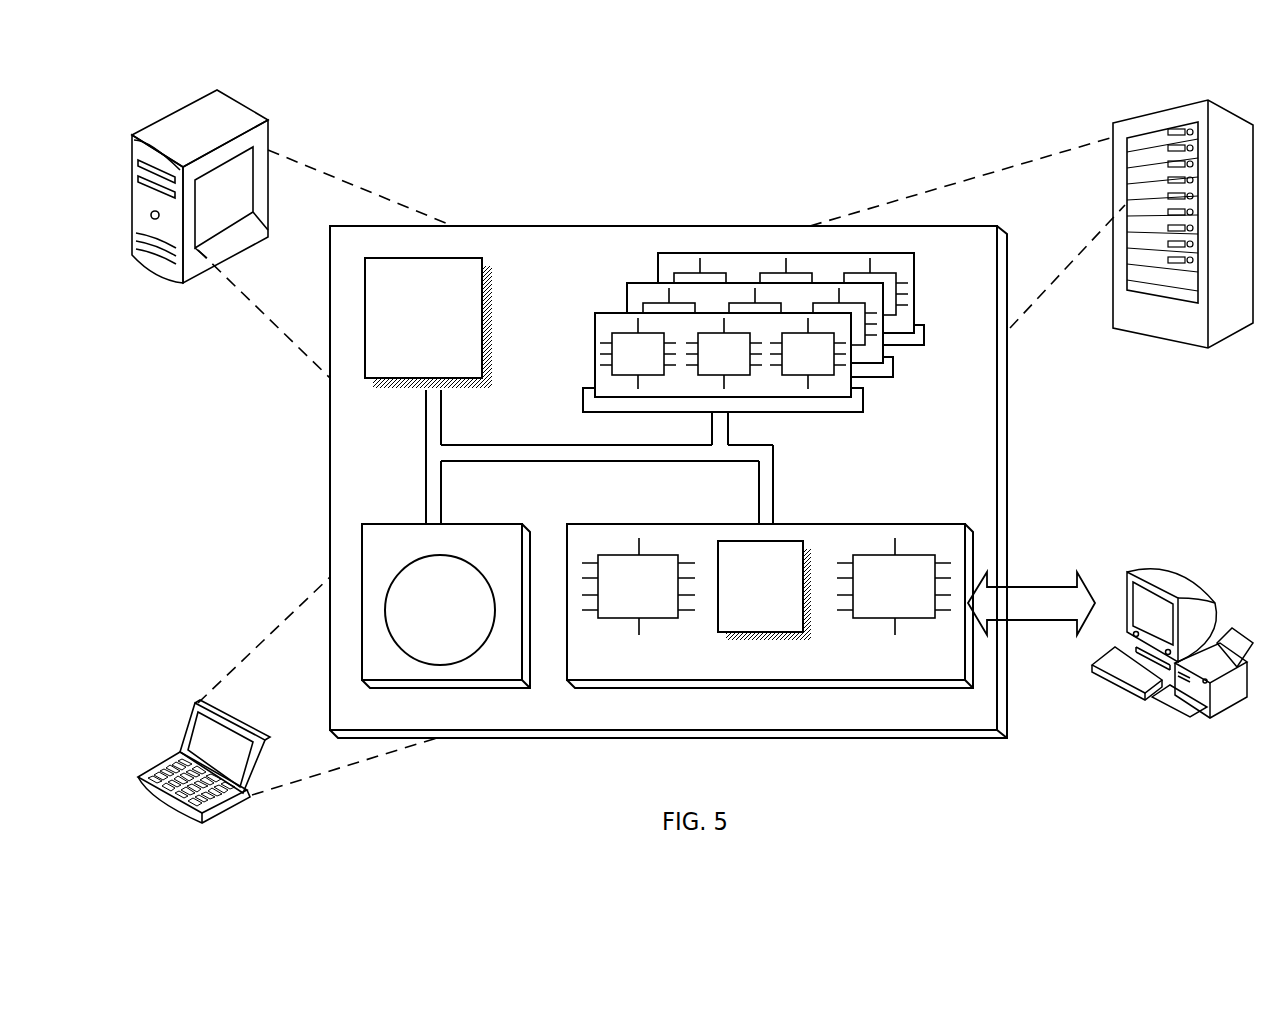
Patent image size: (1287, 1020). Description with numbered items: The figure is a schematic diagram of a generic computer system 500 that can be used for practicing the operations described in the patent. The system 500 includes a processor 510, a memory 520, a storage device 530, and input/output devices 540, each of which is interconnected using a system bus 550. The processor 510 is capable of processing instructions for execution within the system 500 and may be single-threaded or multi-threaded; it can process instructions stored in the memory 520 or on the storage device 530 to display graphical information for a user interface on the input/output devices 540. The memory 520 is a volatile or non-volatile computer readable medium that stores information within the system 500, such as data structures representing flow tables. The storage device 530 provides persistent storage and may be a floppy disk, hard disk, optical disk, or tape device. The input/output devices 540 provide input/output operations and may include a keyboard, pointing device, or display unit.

The generic computer system 500 is at (505, 112).
The processor 510 is at (428, 323).
The memory 520 is at (923, 384).
The storage device 530 is at (446, 606).
The input/output devices 540 is at (1126, 580).
The system bus 550 is at (597, 462).